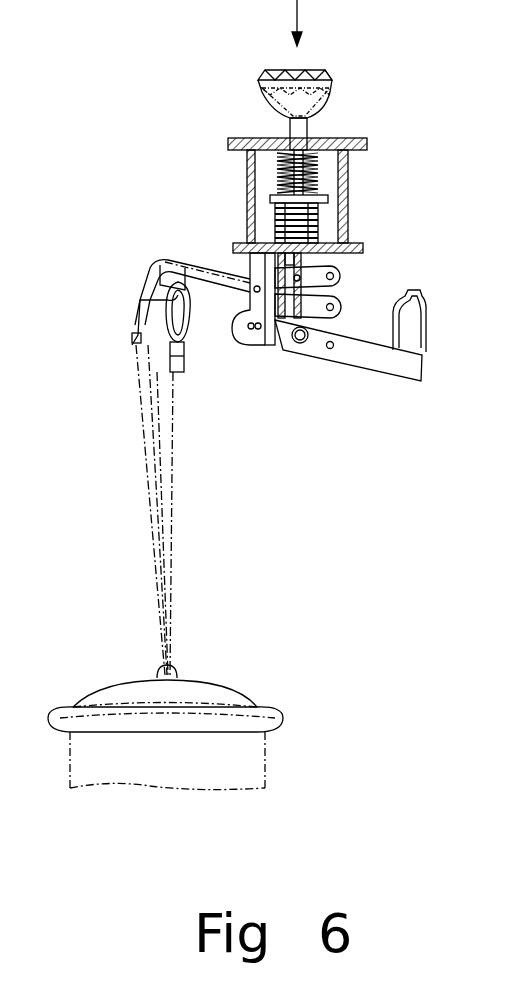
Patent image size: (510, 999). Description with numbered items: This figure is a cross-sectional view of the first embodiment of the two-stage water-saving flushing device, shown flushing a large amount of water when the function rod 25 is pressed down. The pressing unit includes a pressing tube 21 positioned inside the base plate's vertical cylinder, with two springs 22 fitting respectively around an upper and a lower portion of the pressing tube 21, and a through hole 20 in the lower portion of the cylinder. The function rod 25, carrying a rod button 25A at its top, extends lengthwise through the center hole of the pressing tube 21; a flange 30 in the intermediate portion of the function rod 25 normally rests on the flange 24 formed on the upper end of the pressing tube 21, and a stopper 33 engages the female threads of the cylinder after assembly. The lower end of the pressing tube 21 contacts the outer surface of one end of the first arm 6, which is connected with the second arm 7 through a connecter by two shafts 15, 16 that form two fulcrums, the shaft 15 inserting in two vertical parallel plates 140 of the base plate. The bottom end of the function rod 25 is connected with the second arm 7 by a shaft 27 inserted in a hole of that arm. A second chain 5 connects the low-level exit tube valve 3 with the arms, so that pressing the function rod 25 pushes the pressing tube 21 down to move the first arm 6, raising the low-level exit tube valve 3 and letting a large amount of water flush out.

The low-level exit tube valve 3 is at (253, 704).
The second chain 5 is at (164, 550).
The first arm 6 is at (188, 338).
The second arm 7 is at (396, 372).
The shaft 15 is at (225, 265).
The shaft 16 is at (262, 332).
The through hole 20 is at (360, 252).
The pressing tube 21 is at (318, 225).
The springs 22 is at (260, 205).
The flange 24 is at (318, 205).
The function rod 25 is at (287, 135).
The rod button 25A is at (270, 75).
The shaft 27 is at (302, 345).
The flange 30 is at (328, 197).
The stopper 33 is at (362, 140).
The vertical parallel plates 140 is at (262, 344).